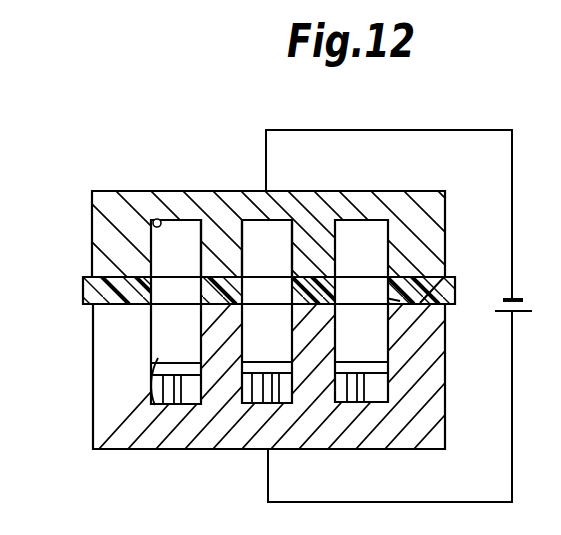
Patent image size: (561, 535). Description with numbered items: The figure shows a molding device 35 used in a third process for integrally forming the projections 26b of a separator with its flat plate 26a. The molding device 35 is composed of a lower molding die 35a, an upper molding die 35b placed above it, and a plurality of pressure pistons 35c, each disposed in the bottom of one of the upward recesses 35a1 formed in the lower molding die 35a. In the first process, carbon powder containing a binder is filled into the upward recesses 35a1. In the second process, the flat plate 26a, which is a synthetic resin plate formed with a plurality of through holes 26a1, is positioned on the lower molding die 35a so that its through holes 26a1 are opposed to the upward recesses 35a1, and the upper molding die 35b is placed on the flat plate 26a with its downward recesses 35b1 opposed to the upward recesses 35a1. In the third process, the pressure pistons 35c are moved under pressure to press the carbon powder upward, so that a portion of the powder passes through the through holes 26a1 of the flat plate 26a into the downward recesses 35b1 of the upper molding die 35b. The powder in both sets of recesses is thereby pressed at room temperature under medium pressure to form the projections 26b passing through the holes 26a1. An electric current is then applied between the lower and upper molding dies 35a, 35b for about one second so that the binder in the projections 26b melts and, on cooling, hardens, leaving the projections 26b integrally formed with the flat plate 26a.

The molding device 35 is at (288, 319).
The lower molding die 35a is at (436, 434).
The upward recesses 35a1 is at (153, 451).
The upper molding die 35b is at (446, 196).
The downward recesses 35b1 is at (153, 219).
The pressure pistons 35c is at (258, 376).
The flat plate 26a is at (264, 293).
The through holes 26a1 is at (440, 272).
The projections 26b is at (254, 221).